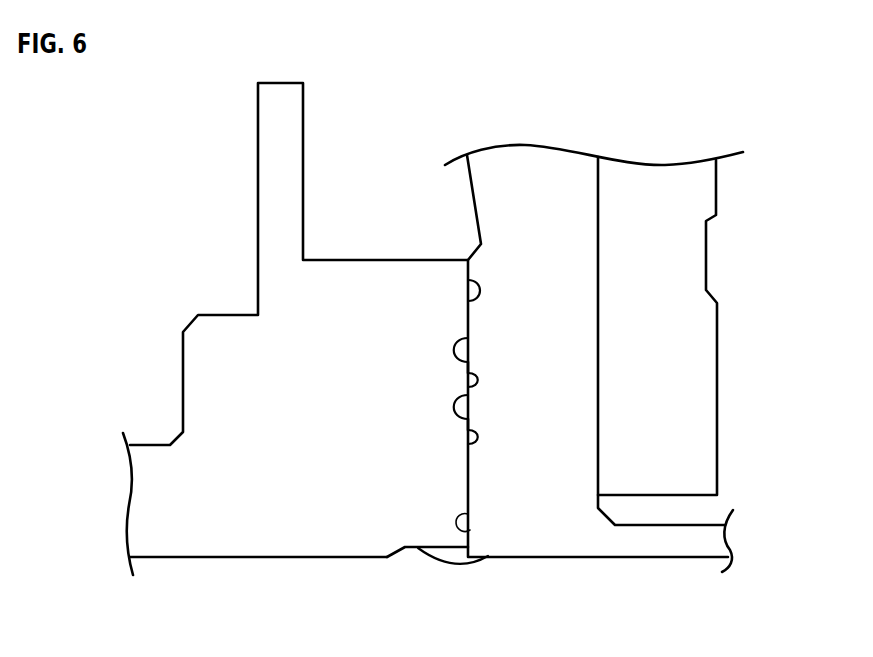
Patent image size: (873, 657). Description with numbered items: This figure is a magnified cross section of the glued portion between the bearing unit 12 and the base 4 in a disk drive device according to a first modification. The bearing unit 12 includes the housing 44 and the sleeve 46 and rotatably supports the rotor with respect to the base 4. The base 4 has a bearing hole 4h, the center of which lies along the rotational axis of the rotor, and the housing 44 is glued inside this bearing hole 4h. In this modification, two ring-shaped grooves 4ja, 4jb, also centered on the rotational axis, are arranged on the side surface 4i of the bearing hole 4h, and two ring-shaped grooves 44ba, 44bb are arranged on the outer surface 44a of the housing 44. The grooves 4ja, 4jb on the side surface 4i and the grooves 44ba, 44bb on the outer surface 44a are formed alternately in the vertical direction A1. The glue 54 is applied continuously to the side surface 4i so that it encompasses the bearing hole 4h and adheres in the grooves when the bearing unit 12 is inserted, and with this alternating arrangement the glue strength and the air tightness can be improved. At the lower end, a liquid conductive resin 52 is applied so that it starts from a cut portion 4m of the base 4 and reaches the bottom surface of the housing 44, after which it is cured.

The base 4 is at (142, 506).
The cut portion 4m is at (412, 548).
The liquid conductive resin 52 is at (456, 556).
The bearing hole 4h is at (431, 252).
The side surface 4i is at (468, 301).
The ring-shaped groove 4ja is at (452, 350).
The ring-shaped groove 4jb is at (452, 406).
The bearing unit 12 is at (643, 117).
The housing 44 is at (563, 167).
The sleeve 46 is at (627, 173).
The ring-shaped groove 44ba is at (480, 380).
The ring-shaped groove 44bb is at (480, 437).
The glue 54 is at (470, 373).
The outer surface 44a is at (470, 530).
The vertical direction A1 is at (769, 88).